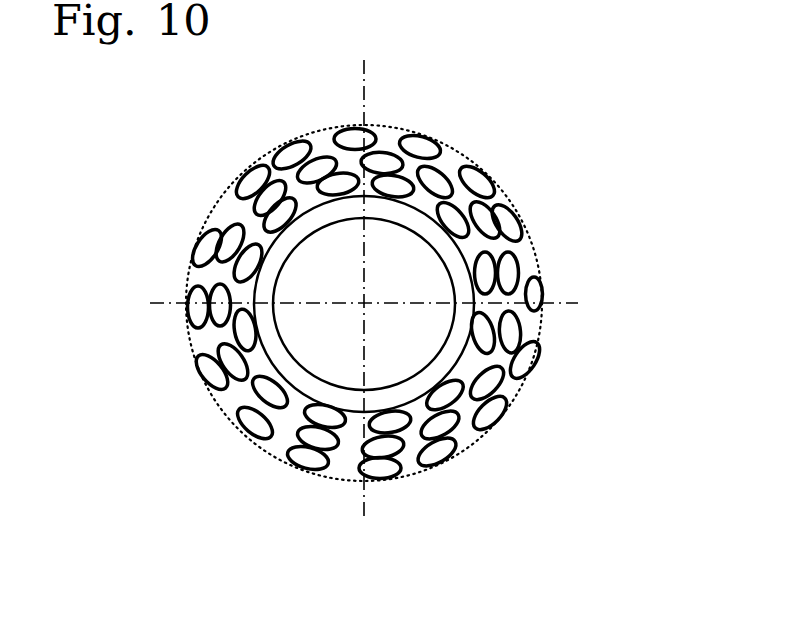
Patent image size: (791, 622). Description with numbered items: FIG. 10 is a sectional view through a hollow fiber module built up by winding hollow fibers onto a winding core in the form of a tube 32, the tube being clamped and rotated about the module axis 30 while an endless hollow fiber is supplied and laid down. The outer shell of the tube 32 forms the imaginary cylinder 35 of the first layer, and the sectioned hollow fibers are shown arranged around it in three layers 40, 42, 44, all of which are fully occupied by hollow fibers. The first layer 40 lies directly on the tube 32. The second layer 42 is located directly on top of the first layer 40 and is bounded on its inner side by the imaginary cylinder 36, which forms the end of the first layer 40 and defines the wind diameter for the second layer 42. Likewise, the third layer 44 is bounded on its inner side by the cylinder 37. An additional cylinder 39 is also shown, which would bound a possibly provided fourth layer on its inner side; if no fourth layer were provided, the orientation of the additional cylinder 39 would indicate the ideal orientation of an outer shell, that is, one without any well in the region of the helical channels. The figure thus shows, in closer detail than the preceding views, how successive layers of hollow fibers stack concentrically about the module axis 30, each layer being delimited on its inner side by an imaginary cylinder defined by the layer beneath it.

The module axis 30 is at (366, 301).
The tube 32 is at (532, 376).
The imaginary cylinder of the first layer 35 is at (433, 203).
The imaginary cylinder of the second layer 36 is at (212, 355).
The cylinder 37 is at (252, 380).
The additional cylinder 39 is at (292, 436).
The first layer 40 is at (472, 388).
The second layer 42 is at (497, 372).
The third layer 44 is at (550, 280).